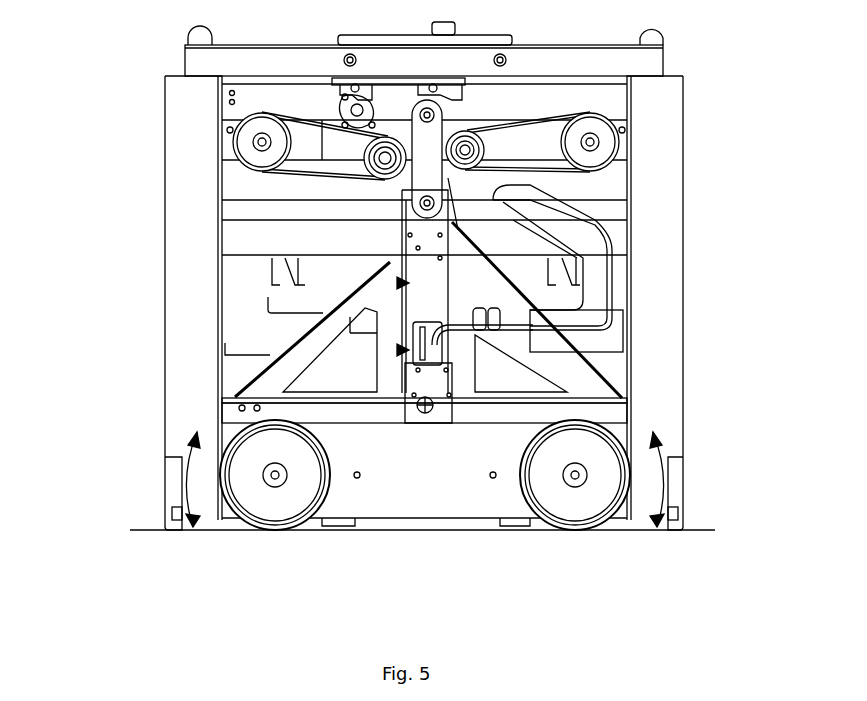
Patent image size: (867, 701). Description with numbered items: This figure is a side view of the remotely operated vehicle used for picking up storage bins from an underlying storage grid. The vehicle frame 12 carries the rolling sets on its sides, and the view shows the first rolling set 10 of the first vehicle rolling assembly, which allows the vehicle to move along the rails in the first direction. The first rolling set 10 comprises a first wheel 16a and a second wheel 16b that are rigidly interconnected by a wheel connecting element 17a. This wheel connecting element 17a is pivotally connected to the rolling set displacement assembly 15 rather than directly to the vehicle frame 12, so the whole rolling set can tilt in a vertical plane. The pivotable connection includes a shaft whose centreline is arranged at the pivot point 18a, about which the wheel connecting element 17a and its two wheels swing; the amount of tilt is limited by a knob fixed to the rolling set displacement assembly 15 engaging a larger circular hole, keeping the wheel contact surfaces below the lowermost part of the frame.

The first rolling set 10 is at (397, 503).
The vehicle frame 12 is at (263, 237).
The rolling set displacement assembly 15 is at (425, 287).
The first wheel 16a is at (273, 498).
The second wheel 16b is at (585, 495).
The wheel connecting element 17a is at (597, 412).
The pivot point 18a is at (430, 418).